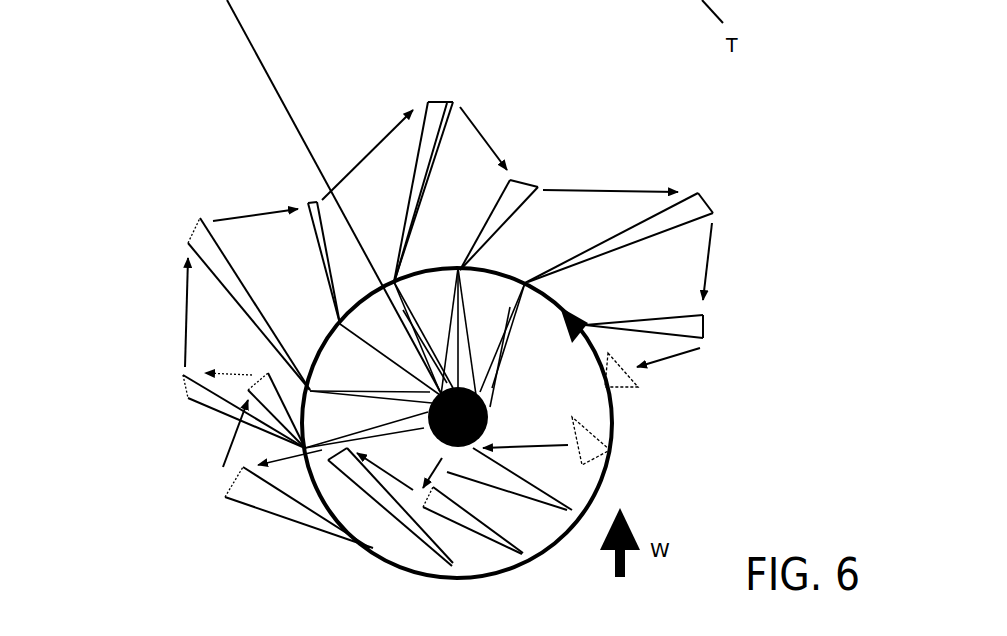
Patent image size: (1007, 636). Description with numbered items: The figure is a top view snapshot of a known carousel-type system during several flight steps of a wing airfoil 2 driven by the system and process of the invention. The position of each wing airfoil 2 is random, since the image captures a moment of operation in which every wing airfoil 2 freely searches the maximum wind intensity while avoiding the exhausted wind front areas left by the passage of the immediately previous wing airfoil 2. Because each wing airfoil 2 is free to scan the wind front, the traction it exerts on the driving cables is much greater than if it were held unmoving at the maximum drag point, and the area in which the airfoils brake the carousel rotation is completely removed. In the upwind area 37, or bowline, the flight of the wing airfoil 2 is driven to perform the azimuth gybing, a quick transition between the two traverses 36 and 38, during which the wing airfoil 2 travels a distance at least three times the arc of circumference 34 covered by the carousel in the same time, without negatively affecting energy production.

The wing airfoil 2 is at (197, 228).
The arc of circumference 34 is at (615, 415).
The traverse 36 is at (578, 137).
The upwind area 37 is at (760, 313).
The traverse 38 is at (155, 487).